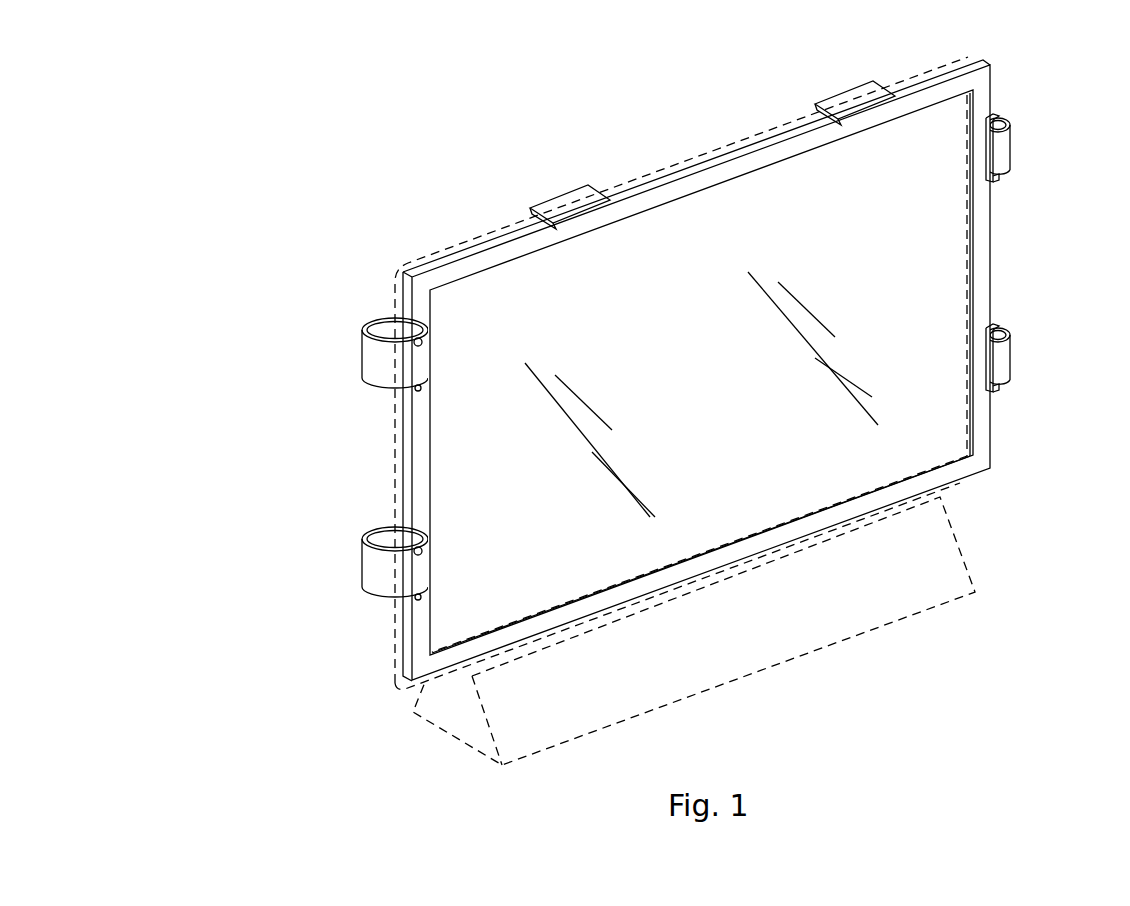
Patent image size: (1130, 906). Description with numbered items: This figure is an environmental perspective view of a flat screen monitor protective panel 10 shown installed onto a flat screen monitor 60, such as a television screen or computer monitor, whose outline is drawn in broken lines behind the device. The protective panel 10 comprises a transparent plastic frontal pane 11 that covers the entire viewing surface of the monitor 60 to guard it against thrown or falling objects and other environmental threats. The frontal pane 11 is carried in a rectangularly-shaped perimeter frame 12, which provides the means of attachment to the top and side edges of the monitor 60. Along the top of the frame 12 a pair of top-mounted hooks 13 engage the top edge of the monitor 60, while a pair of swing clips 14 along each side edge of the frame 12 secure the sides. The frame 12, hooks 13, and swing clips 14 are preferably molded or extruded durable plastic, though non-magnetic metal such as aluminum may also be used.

The flat screen monitor protective panel 10 is at (248, 129).
The transparent plastic frontal pane 11 is at (943, 275).
The perimeter frame 12 is at (418, 679).
The top-mounted hooks 13 is at (848, 102).
The swing clips 14 is at (1002, 148).
The flat screen monitor 60 is at (426, 248).